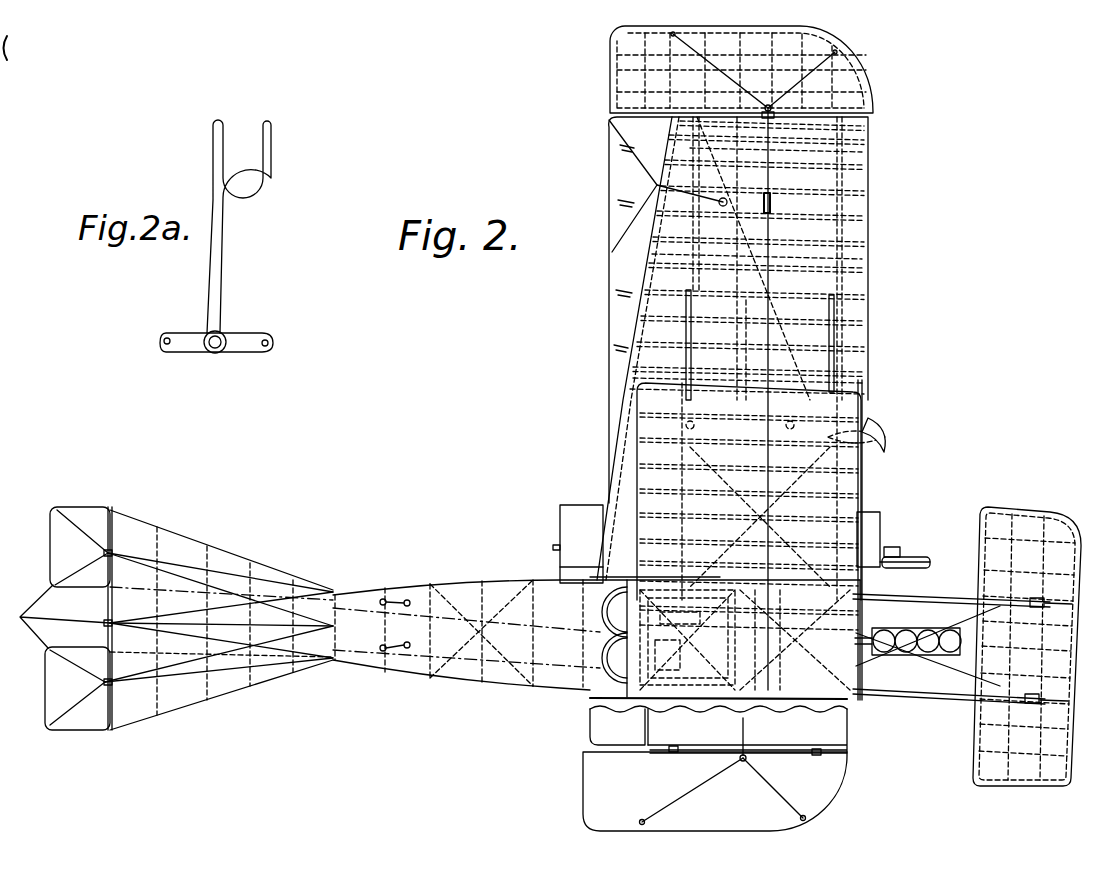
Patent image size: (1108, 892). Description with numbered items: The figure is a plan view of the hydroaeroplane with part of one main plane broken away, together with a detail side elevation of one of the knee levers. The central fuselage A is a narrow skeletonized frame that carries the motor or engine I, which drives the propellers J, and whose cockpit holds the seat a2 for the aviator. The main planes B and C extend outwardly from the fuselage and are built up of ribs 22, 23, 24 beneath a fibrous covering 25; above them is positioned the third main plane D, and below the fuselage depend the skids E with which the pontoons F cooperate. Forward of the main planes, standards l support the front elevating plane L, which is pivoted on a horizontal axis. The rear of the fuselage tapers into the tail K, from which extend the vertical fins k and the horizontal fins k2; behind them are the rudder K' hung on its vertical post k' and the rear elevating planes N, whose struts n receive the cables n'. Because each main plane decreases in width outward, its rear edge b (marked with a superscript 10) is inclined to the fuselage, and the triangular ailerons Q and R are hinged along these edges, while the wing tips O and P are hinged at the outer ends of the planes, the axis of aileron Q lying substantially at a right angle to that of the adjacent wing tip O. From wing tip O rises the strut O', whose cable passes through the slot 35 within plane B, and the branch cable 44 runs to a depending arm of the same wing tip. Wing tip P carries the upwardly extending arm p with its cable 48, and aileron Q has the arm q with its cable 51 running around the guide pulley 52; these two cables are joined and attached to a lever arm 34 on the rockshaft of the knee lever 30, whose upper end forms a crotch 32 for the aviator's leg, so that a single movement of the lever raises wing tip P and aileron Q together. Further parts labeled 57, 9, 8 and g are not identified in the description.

In FIG. 2A, the crotch 32 is at (271, 138).
In FIG. 2A, the knee lever 30 is at (223, 252).
In FIG. 2A, the lever arm 34 is at (244, 350).
In FIG. 2, the lever arm 34 is at (768, 160).
In FIG. 2, the wing tip O is at (755, 69).
In FIG. 2, the strut O' is at (754, 75).
In FIG. 2, the main plane B is at (862, 260).
In FIG. 2, the aileron Q is at (617, 268).
In FIG. 2, the upwardly extending arm q is at (655, 185).
In FIG. 2, the guide pulley 52 is at (721, 206).
In FIG. 2, the slot 35 is at (772, 204).
In FIG. 2, the branch cable 44 is at (768, 300).
In FIG. 2, the rod 57 is at (735, 331).
In FIG. 2, the cable 51 is at (735, 356).
In FIG. 2, the rib 24 is at (855, 195).
In FIG. 2, the covering 25 is at (805, 255).
In FIG. 2, the rib 23 is at (858, 375).
In FIG. 2, the datum line 10 is at (605, 145).
In FIG. 2, the datum line 9 is at (655, 357).
In FIG. 2, the rear edge b is at (640, 327).
In FIG. 2, the third main plane D is at (640, 475).
In FIG. 2, the fuselage A is at (545, 582).
In FIG. 2, the longeron boom 8 is at (925, 588).
In FIG. 2, the pontoon F is at (898, 512).
In FIG. 2, the seat a2 is at (600, 680).
In FIG. 2, the tail K is at (241, 620).
In FIG. 2, the rudder K' is at (61, 596).
In FIG. 2, the elevating plane N is at (70, 510).
In FIG. 2, the strut n is at (81, 617).
In FIG. 2, the vertical post k' is at (111, 597).
In FIG. 2, the horizontal fin k2 is at (130, 561).
In FIG. 2, the vertical fin k is at (221, 568).
In FIG. 2, the cable n' is at (219, 622).
In FIG. 2, the main plane C is at (845, 729).
In FIG. 2, the aileron R is at (597, 728).
In FIG. 2, the cable 48 is at (770, 733).
In FIG. 2, the wing tip P is at (847, 782).
In FIG. 2, the upwardly extending arm p is at (747, 759).
In FIG. 2, the rib 22 is at (862, 530).
In FIG. 2, the propeller J is at (880, 430).
In FIG. 2, the skid E is at (930, 564).
In FIG. 2, the crank g is at (904, 563).
In FIG. 2, the engine I is at (921, 655).
In FIG. 2, the front elevating plane L is at (1074, 685).
In FIG. 2, the standard l is at (1047, 603).